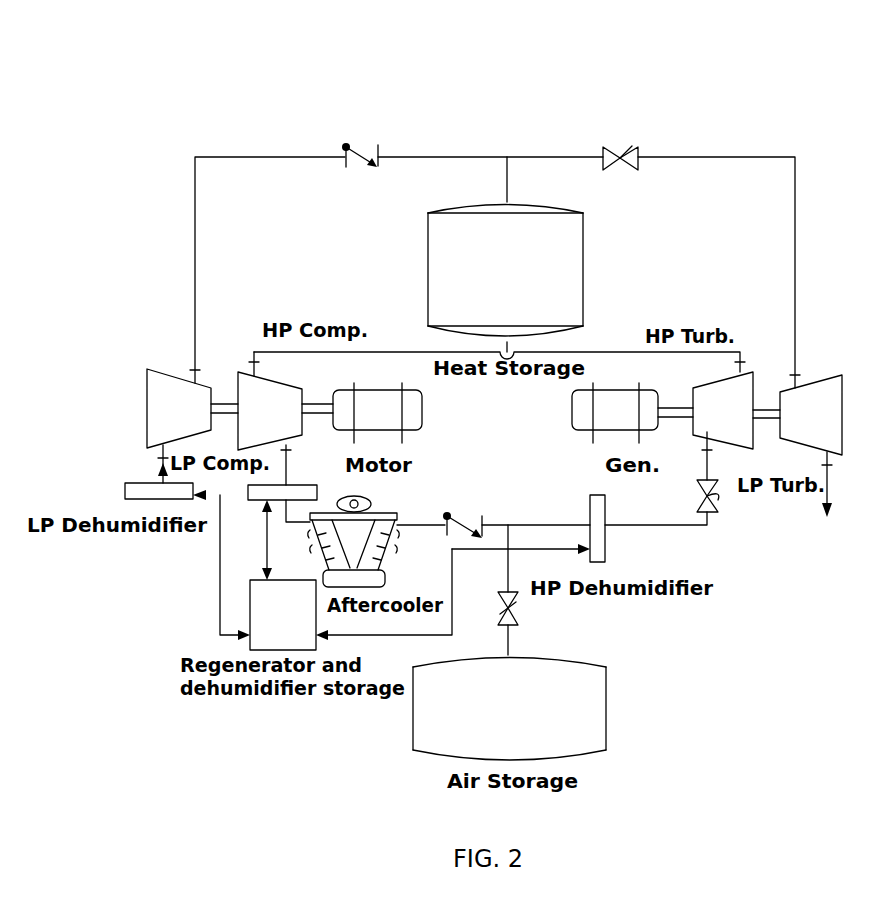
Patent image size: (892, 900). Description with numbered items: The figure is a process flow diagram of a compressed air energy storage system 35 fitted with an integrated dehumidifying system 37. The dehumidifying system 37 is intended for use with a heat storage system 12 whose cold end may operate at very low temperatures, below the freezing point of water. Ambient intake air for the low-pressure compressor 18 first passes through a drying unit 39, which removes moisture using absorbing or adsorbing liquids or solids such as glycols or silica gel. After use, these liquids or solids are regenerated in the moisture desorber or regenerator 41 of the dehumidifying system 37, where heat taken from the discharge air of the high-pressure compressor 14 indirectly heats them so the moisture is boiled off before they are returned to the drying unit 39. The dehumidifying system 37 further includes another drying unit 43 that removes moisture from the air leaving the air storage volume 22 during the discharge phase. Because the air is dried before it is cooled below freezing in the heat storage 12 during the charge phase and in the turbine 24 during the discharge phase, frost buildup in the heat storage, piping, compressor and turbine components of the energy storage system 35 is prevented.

The heat storage system 12 is at (505, 279).
The high-pressure compressor 14 is at (270, 411).
The low-pressure compressor 18 is at (179, 408).
The air storage volume 22 is at (509, 709).
The turbine 24 is at (723, 410).
The compressed air energy storage system 35 is at (655, 89).
The integrated dehumidifying system 37 is at (152, 698).
The drying unit 39 is at (125, 488).
The regenerator 41 is at (283, 615).
The drying unit 43 is at (607, 535).